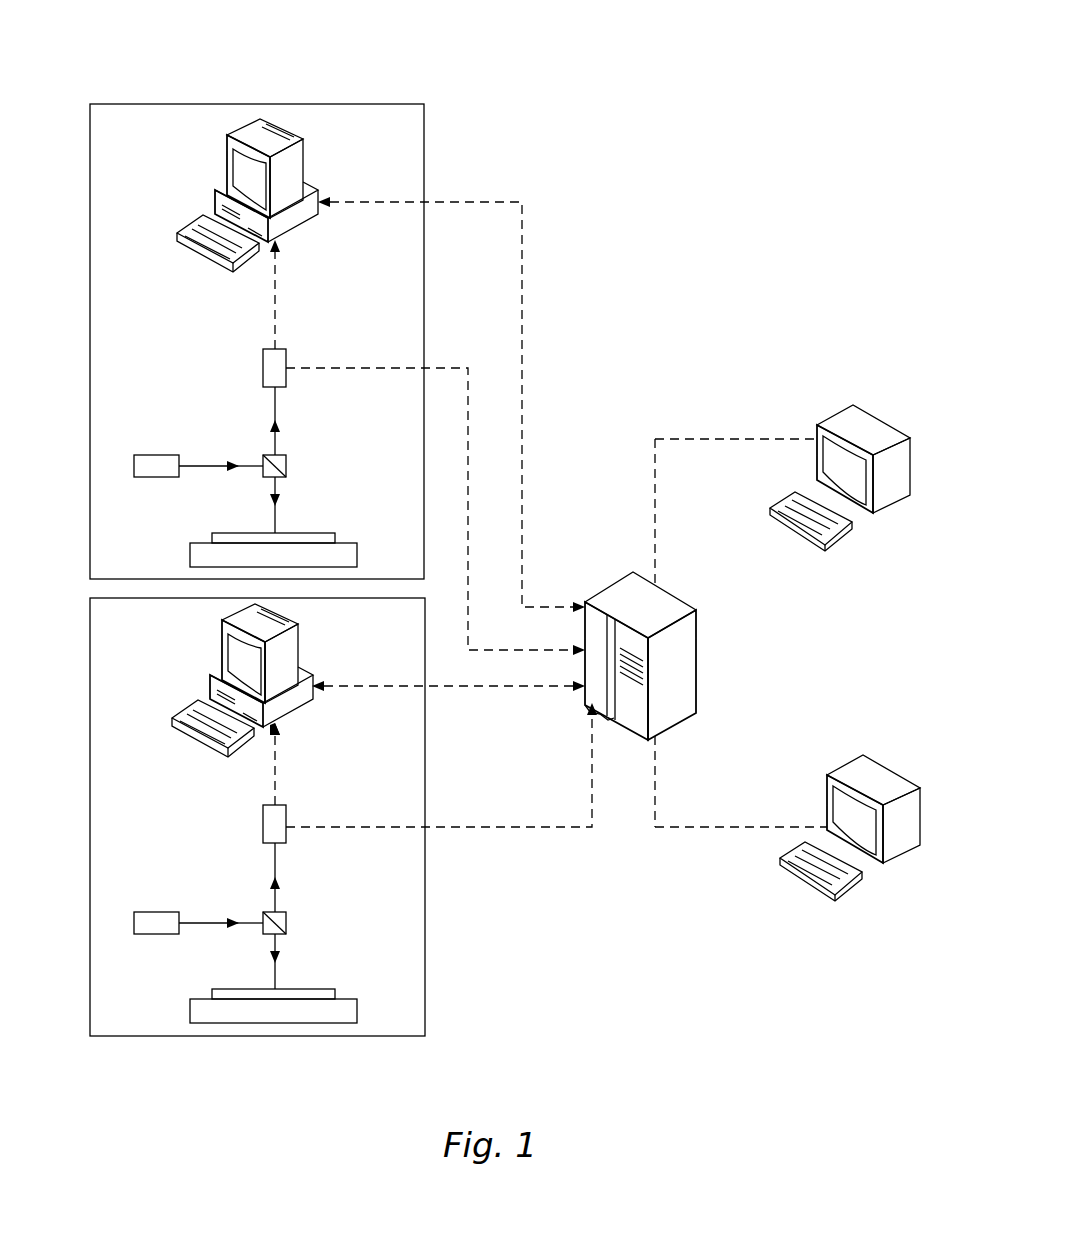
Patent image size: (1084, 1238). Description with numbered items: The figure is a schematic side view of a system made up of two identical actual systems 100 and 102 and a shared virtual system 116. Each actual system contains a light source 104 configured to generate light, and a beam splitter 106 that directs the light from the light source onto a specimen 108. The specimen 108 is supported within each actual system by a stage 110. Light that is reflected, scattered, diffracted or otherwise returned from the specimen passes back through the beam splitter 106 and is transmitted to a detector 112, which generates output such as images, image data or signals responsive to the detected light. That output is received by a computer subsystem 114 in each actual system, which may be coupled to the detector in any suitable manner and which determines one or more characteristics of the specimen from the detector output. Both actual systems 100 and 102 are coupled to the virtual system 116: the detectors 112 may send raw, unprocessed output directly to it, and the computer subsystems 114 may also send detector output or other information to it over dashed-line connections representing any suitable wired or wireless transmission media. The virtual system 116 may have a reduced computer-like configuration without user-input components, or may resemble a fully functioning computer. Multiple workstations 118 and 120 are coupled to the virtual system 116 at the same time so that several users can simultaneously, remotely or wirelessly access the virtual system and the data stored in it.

The actual system 100 is at (148, 103).
The actual system 102 is at (168, 1037).
The light source 104 is at (169, 455).
The beam splitter 106 is at (287, 466).
The specimen 108 is at (320, 533).
The stage 110 is at (190, 552).
The detector 112 is at (262, 368).
The computer subsystem 114 is at (217, 197).
The virtual system 116 is at (612, 580).
The workstation 118 is at (835, 414).
The workstation 120 is at (838, 768).